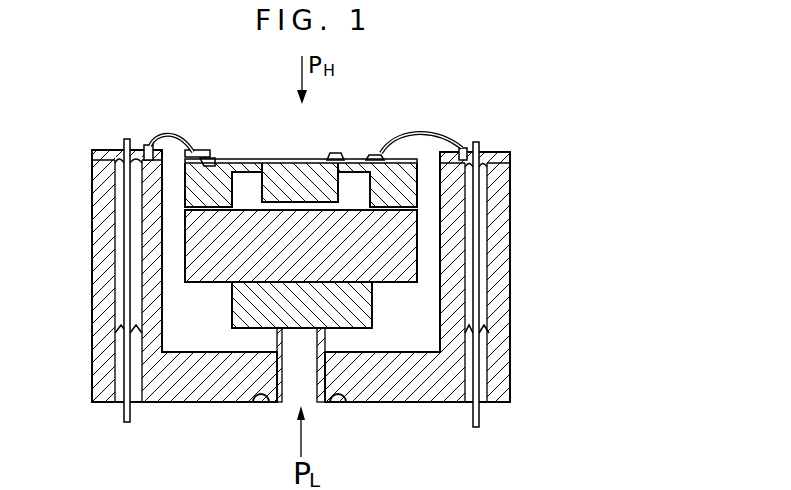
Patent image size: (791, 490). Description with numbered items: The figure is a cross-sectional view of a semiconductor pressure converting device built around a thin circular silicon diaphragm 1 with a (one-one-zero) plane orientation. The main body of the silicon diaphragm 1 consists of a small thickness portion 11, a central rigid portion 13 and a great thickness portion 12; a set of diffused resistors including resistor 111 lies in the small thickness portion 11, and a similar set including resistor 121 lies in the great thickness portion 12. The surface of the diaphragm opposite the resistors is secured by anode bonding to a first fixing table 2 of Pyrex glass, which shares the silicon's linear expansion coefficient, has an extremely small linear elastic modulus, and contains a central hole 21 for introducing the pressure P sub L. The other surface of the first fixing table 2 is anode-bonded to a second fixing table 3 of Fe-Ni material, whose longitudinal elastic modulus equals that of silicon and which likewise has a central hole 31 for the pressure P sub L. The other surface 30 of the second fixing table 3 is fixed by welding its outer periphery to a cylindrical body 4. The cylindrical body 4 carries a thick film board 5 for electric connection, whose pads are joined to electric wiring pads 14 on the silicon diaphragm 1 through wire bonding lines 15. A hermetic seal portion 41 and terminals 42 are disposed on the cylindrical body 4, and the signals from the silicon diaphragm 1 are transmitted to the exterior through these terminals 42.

The silicon diaphragm 1 is at (279, 153).
The first fixing table 2 is at (200, 232).
The second fixing table 3 is at (241, 309).
The cylindrical body 4 is at (100, 354).
The thick film board 5 is at (105, 150).
The small thickness portion 11 is at (252, 172).
The great thickness portion 12 is at (412, 170).
The central rigid portion 13 is at (298, 160).
The electric wiring pads 14 is at (195, 143).
The wire bonding lines 15 is at (150, 140).
The hole 21 is at (307, 243).
The other surface of the second fixing table 30 is at (278, 405).
The hole 31 is at (303, 362).
The hermetic seal portion 41 is at (120, 274).
The terminals 42 is at (117, 390).
The resistor 111 is at (341, 156).
The resistor 121 is at (215, 158).